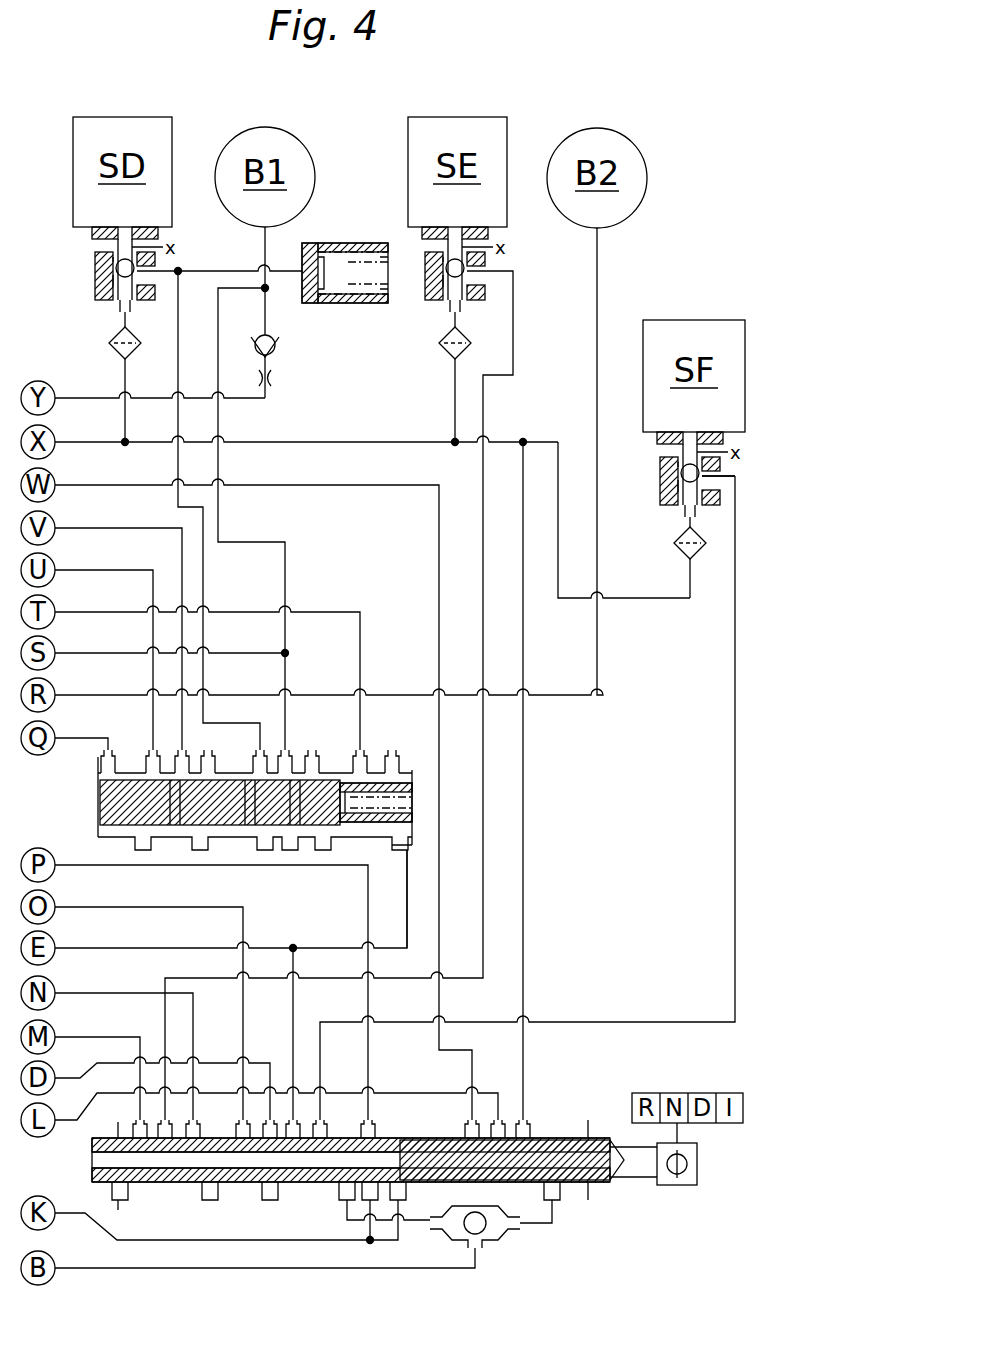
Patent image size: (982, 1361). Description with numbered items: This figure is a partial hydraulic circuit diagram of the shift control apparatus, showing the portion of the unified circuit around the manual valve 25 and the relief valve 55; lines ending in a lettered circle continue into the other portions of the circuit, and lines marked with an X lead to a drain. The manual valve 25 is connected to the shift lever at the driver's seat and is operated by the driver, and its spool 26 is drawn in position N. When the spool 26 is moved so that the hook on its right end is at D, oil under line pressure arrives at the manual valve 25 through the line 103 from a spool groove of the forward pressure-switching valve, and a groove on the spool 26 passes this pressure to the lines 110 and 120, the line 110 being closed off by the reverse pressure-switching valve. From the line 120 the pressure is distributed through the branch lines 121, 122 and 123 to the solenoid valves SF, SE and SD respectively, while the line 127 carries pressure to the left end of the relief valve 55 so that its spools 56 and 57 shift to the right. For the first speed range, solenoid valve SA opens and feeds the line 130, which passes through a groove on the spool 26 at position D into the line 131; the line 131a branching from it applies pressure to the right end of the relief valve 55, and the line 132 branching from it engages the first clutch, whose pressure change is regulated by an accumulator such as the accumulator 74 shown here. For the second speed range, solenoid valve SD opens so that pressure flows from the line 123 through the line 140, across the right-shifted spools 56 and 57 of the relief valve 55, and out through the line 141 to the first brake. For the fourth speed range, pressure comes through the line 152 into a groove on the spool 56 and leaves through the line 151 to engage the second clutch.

The manual valve 25 is at (394, 1161).
The spool 26 is at (556, 1140).
The relief valve 55 is at (217, 838).
The spool 56 is at (190, 838).
The spool 57 is at (323, 838).
The accumulator 74 is at (333, 244).
The line 103 is at (273, 487).
The line 110 is at (390, 1092).
The line 120 is at (293, 442).
The line 121 is at (640, 598).
The line 122 is at (452, 394).
The line 123 is at (122, 392).
The line 127 is at (84, 718).
The line 130 is at (222, 1062).
The line 131 is at (294, 998).
The line 131a is at (324, 946).
The line 132 is at (112, 946).
The line 140 is at (204, 586).
The line 141 is at (286, 566).
The line 151 is at (99, 510).
The line 152 is at (99, 552).